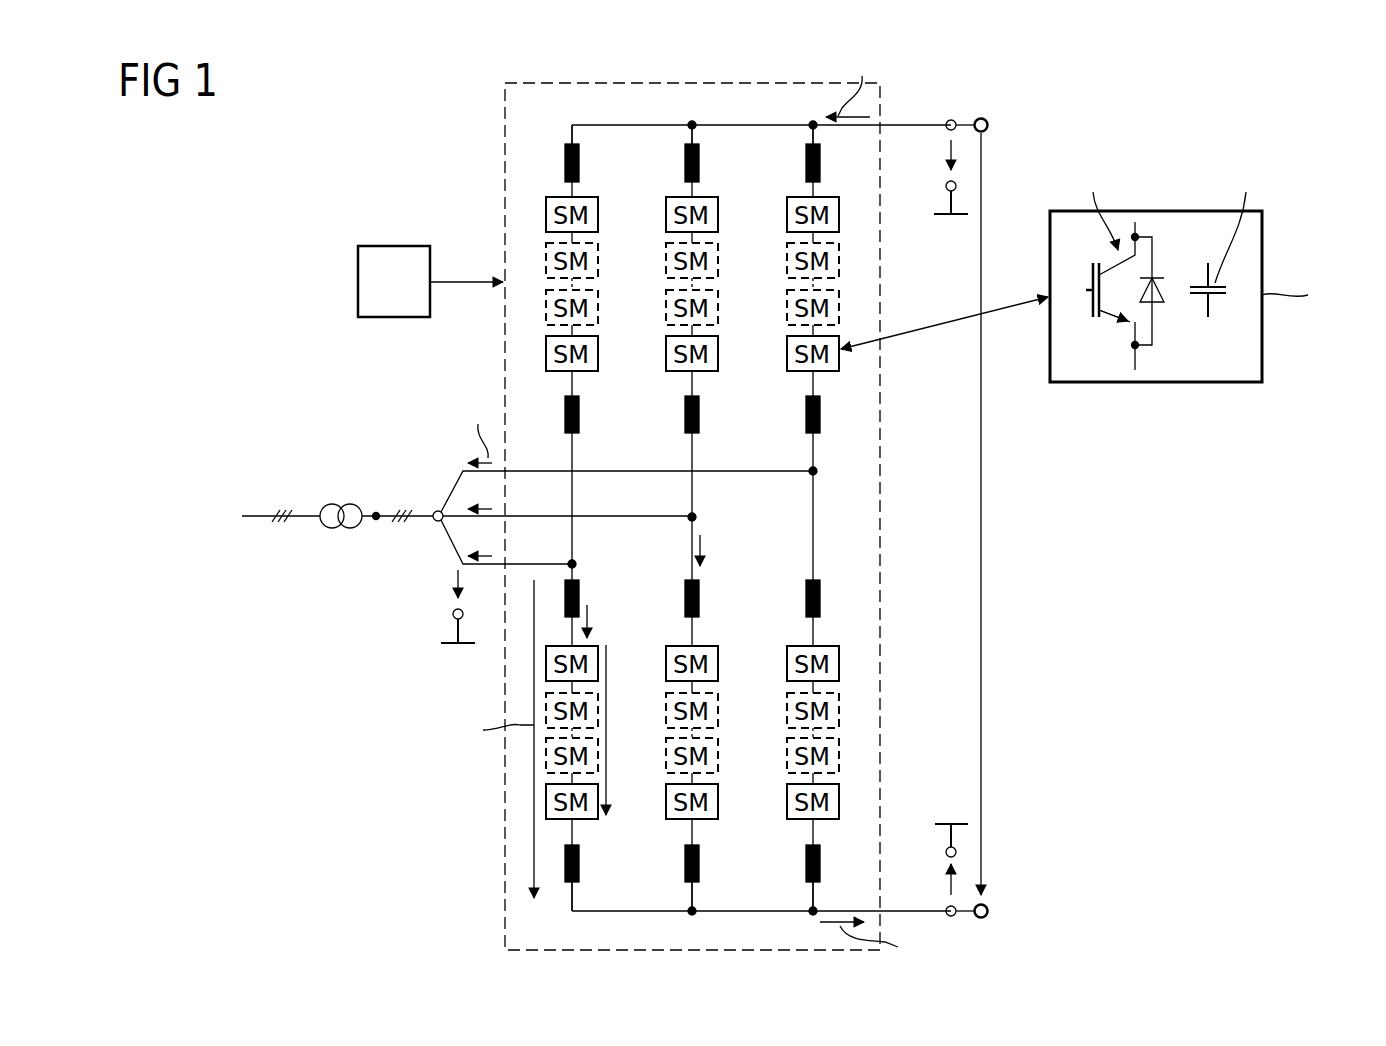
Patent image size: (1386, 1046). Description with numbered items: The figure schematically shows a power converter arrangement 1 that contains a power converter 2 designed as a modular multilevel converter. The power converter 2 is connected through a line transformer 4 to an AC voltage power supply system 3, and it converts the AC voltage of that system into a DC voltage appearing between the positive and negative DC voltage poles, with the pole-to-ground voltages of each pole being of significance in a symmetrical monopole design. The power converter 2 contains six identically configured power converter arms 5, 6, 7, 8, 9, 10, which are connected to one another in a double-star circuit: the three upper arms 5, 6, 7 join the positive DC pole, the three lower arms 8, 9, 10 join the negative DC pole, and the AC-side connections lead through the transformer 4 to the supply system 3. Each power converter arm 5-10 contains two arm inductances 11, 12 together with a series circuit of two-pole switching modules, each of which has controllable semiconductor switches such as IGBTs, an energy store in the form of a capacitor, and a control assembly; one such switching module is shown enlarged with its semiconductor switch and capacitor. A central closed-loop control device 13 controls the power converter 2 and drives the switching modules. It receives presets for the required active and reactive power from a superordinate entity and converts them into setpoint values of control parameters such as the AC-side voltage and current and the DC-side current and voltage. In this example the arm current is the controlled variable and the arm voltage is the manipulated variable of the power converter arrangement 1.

The power converter arrangement 1 is at (372, 124).
The power converter 2 is at (600, 83).
The AC voltage power supply system 3 is at (258, 514).
The line transformer 4 is at (336, 504).
The power converter arm 5 is at (572, 134).
The power converter arm 6 is at (692, 134).
The power converter arm 7 is at (813, 134).
The power converter arm 8 is at (572, 898).
The power converter arm 9 is at (692, 898).
The power converter arm 10 is at (813, 898).
The arm inductance 11 is at (565, 160).
The arm inductance 12 is at (685, 415).
The central closed-loop control device 13 is at (358, 282).